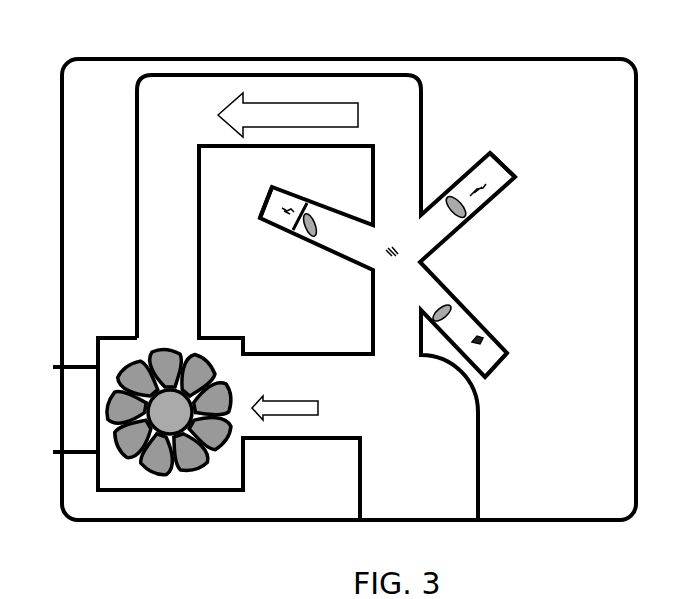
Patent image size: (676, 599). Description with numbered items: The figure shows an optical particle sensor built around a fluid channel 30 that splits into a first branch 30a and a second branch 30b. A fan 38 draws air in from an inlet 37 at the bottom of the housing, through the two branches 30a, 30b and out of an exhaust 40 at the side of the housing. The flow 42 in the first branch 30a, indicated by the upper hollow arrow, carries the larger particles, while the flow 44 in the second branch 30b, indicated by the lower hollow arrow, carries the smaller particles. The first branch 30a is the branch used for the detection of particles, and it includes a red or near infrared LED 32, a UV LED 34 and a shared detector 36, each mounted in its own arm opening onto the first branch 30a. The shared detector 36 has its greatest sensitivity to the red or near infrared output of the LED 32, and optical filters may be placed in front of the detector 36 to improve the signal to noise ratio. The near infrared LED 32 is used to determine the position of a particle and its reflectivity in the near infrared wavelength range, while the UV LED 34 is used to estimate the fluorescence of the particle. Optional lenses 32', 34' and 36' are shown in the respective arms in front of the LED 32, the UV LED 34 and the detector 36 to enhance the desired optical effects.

The fluid channel 30 is at (480, 453).
The first branch 30a is at (416, 203).
The second branch 30b is at (314, 391).
The red or near infrared LED 32 is at (505, 339).
The lens 32' is at (466, 296).
The UV LED 34 is at (496, 151).
The lens 34' is at (452, 173).
The shared detector 36 is at (260, 198).
The lens 36' is at (298, 257).
The inlet 37 is at (405, 541).
The fan 38 is at (182, 352).
The exhaust 40 is at (38, 412).
The flow 42 is at (343, 97).
The flow 44 is at (310, 414).